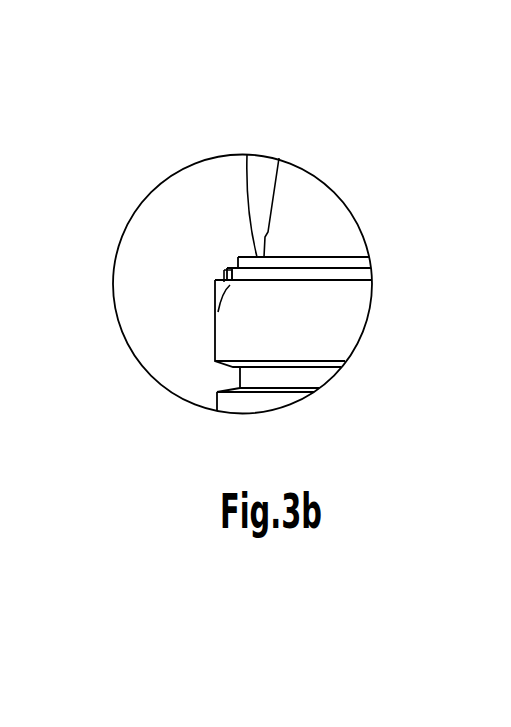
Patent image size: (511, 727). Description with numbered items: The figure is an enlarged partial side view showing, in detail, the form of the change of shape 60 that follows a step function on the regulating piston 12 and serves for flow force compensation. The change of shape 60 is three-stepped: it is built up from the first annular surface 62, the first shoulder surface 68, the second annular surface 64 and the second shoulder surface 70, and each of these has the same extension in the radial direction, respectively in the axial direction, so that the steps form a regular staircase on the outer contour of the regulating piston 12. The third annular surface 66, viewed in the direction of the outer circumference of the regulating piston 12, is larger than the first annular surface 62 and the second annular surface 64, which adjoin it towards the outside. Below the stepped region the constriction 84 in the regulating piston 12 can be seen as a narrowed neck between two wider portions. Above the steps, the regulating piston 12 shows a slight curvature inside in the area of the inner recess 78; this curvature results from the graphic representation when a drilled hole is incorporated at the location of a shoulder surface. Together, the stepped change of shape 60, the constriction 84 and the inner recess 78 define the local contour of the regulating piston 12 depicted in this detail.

The regulating piston 12 is at (332, 315).
The change of shape 60 is at (212, 258).
The first annular surface 62 is at (218, 312).
The second annular surface 64 is at (235, 283).
The third annular surface 66 is at (247, 155).
The first shoulder surface 68 is at (226, 271).
The second shoulder surface 70 is at (234, 259).
The inner recess 78 is at (262, 202).
The constriction 84 is at (230, 377).